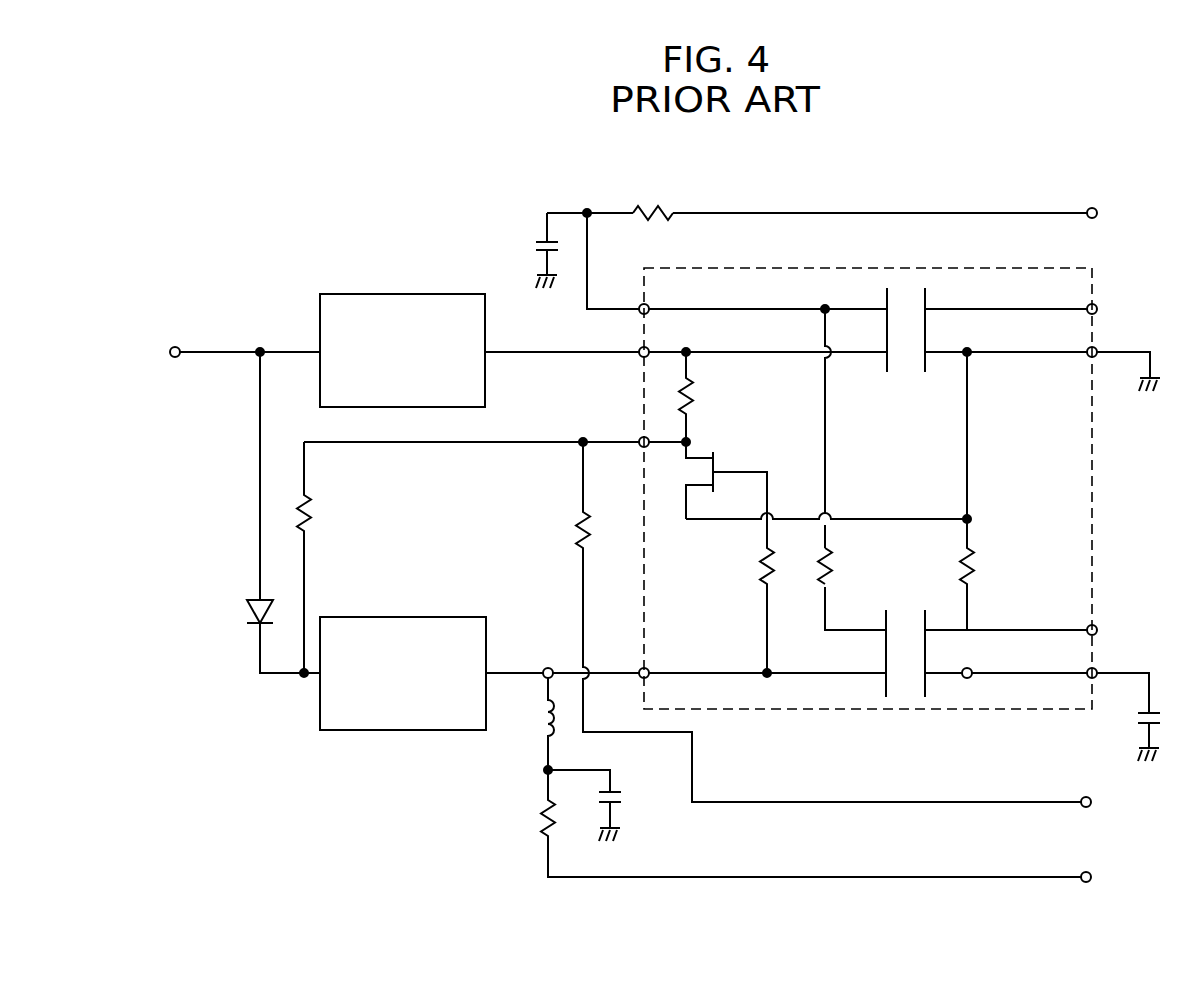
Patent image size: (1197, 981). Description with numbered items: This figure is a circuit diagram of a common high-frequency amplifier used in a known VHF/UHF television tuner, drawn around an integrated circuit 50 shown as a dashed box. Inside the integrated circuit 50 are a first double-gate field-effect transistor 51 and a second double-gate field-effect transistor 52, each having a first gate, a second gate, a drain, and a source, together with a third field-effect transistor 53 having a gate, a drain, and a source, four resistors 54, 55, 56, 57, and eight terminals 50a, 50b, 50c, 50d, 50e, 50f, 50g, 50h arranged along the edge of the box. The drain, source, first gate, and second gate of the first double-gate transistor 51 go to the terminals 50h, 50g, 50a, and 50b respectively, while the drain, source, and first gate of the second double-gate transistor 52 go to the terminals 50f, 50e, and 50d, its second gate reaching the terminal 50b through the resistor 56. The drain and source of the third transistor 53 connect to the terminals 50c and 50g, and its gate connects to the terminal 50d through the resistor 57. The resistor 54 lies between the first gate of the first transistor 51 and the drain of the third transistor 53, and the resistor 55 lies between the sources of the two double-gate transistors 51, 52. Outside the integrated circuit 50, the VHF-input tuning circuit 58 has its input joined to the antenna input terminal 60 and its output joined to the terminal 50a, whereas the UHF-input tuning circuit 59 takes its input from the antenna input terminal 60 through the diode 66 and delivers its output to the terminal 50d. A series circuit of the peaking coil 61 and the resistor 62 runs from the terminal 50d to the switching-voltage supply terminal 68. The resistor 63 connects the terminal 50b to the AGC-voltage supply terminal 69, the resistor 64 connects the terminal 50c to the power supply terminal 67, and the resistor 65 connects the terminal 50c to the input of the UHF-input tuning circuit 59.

The integrated circuit 50 is at (1093, 487).
The terminal 50a is at (640, 350).
The terminal 50b is at (642, 305).
The terminal 50c is at (640, 440).
The terminal 50d is at (640, 670).
The terminal 50e is at (1098, 673).
The terminal 50f is at (1098, 630).
The terminal 50g is at (1098, 352).
The terminal 50h is at (1098, 309).
The first double-gate field-effect transistor 51 is at (905, 310).
The second double-gate field-effect transistor 52 is at (904, 690).
The third field-effect transistor 53 is at (688, 470).
The resistor 54 is at (692, 395).
The resistor 55 is at (972, 570).
The resistor 56 is at (830, 570).
The resistor 57 is at (762, 570).
The VHF-input tuning circuit 58 is at (405, 294).
The UHF-input tuning circuit 59 is at (408, 617).
The antenna input terminal 60 is at (178, 348).
The peaking coil 61 is at (540, 722).
The resistor 62 is at (543, 820).
The resistor 63 is at (648, 208).
The resistor 64 is at (578, 530).
The resistor 65 is at (310, 508).
The diode 66 is at (247, 620).
The power supply terminal 67 is at (1091, 802).
The switching-voltage supply terminal 68 is at (1091, 877).
The AGC-voltage supply terminal 69 is at (1098, 213).